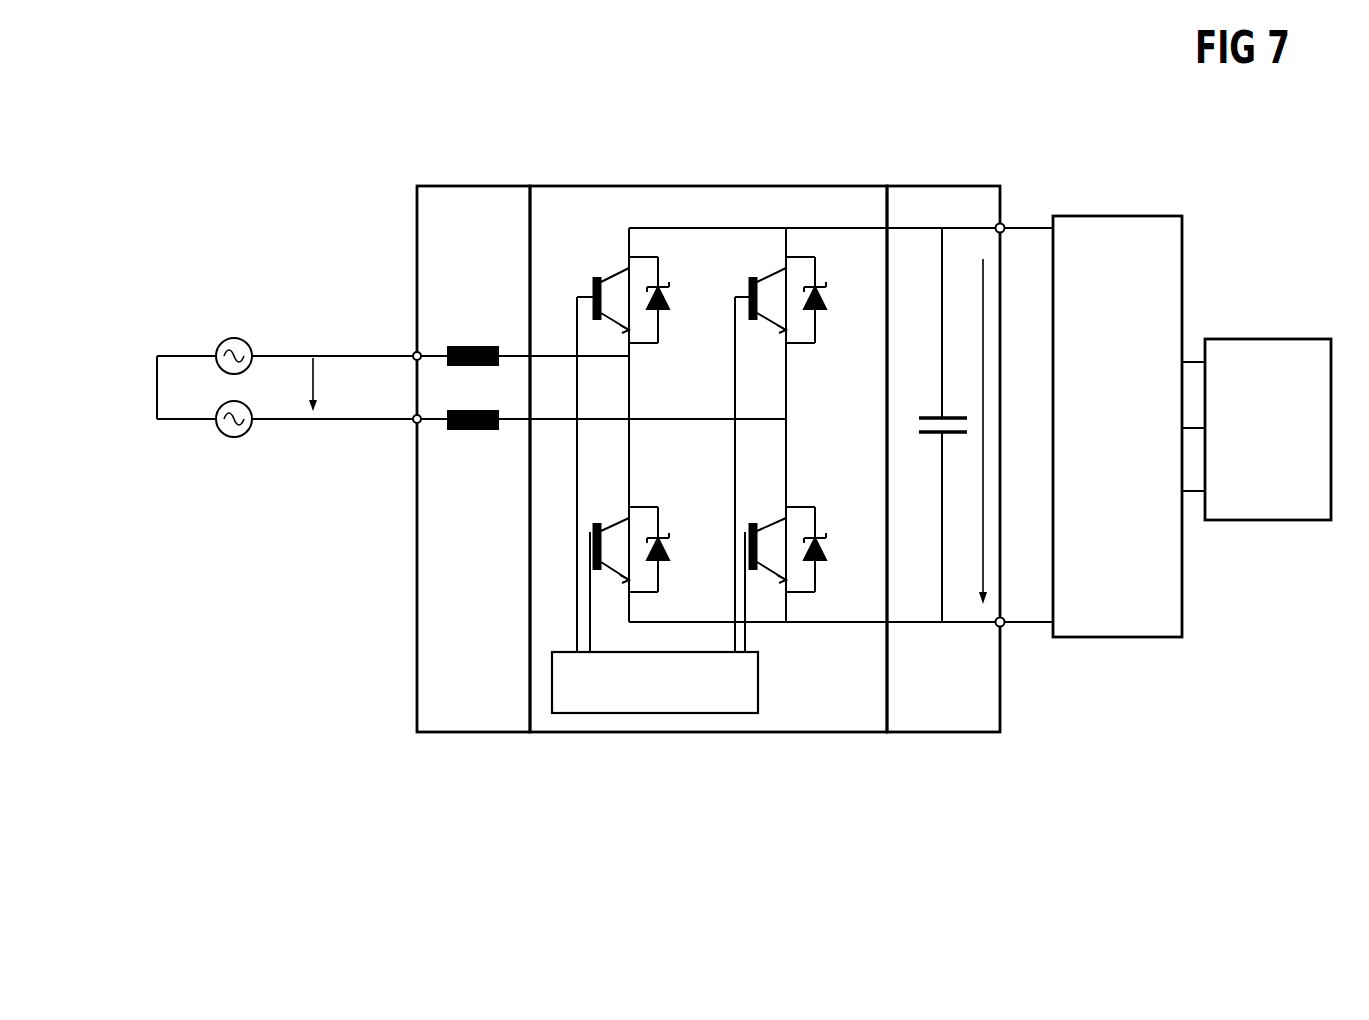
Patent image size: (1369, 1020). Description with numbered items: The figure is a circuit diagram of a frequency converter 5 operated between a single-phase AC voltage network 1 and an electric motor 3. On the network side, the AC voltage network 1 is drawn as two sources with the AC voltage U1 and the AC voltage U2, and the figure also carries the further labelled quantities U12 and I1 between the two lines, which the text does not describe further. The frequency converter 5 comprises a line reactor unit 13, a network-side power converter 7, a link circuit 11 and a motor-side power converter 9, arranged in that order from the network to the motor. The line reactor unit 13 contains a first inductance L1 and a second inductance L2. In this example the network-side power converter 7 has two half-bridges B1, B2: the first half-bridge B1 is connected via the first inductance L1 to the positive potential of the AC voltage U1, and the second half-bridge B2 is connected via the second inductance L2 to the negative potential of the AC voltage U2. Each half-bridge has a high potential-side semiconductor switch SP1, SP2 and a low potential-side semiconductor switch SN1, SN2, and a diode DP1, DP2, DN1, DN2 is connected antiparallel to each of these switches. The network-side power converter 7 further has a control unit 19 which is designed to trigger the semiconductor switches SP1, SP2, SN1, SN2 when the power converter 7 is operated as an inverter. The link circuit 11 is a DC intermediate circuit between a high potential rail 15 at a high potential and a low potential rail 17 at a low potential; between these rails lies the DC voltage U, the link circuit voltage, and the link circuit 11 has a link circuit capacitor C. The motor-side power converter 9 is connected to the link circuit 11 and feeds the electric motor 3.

The AC voltage network 1 is at (215, 226).
The electric motor 3 is at (1276, 523).
The frequency converter 5 is at (996, 777).
The network-side power converter 7 is at (808, 735).
The motor-side power converter 9 is at (1133, 640).
The link circuit 11 is at (946, 735).
The line reactor unit 13 is at (467, 733).
The high potential rail 15 is at (860, 226).
The low potential rail 17 is at (843, 628).
The control unit 19 is at (645, 714).
The first half-bridge B1 is at (625, 210).
The second half-bridge B2 is at (777, 212).
The high potential-side semiconductor switch SP1 is at (594, 280).
The high potential-side semiconductor switch SP2 is at (750, 283).
The low potential-side semiconductor switch SN1 is at (586, 513).
The low potential-side semiconductor switch SN2 is at (732, 537).
The diode DP1 is at (673, 292).
The diode DP2 is at (831, 295).
The diode DN1 is at (673, 546).
The diode DN2 is at (830, 548).
The first inductance L1 is at (477, 345).
The second inductance L2 is at (460, 405).
The AC voltage U1 is at (248, 325).
The AC voltage U2 is at (248, 392).
The line-to-line voltage U12 is at (312, 380).
The line current I1 is at (387, 350).
The link circuit capacitor C is at (937, 440).
The DC voltage U is at (974, 431).